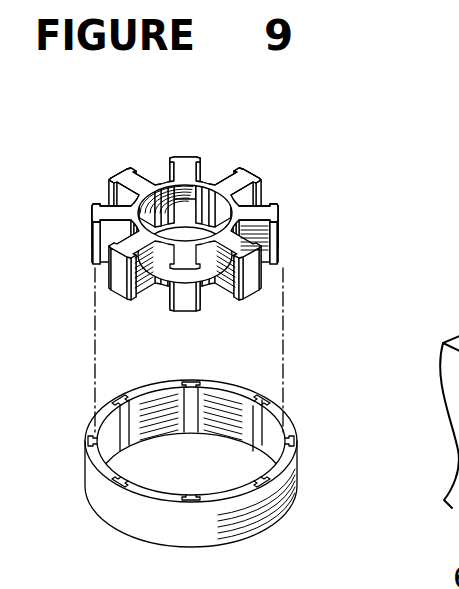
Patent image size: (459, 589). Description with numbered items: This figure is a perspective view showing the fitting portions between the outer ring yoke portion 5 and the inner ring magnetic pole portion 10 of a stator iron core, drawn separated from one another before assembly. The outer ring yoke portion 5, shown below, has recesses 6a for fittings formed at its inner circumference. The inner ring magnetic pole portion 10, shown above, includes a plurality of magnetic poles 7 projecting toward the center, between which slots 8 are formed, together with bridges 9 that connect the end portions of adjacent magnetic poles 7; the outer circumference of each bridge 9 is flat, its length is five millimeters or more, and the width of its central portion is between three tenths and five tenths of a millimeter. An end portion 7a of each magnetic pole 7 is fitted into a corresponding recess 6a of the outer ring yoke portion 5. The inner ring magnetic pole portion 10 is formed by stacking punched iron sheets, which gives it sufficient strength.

The outer ring yoke portion 5 is at (213, 435).
The recesses for fittings 6a is at (283, 441).
The magnetic poles 7 is at (142, 177).
The end portion 7a is at (282, 210).
The slots 8 is at (208, 168).
The bridges 9 is at (179, 205).
The inner ring magnetic pole portion 10 is at (100, 203).